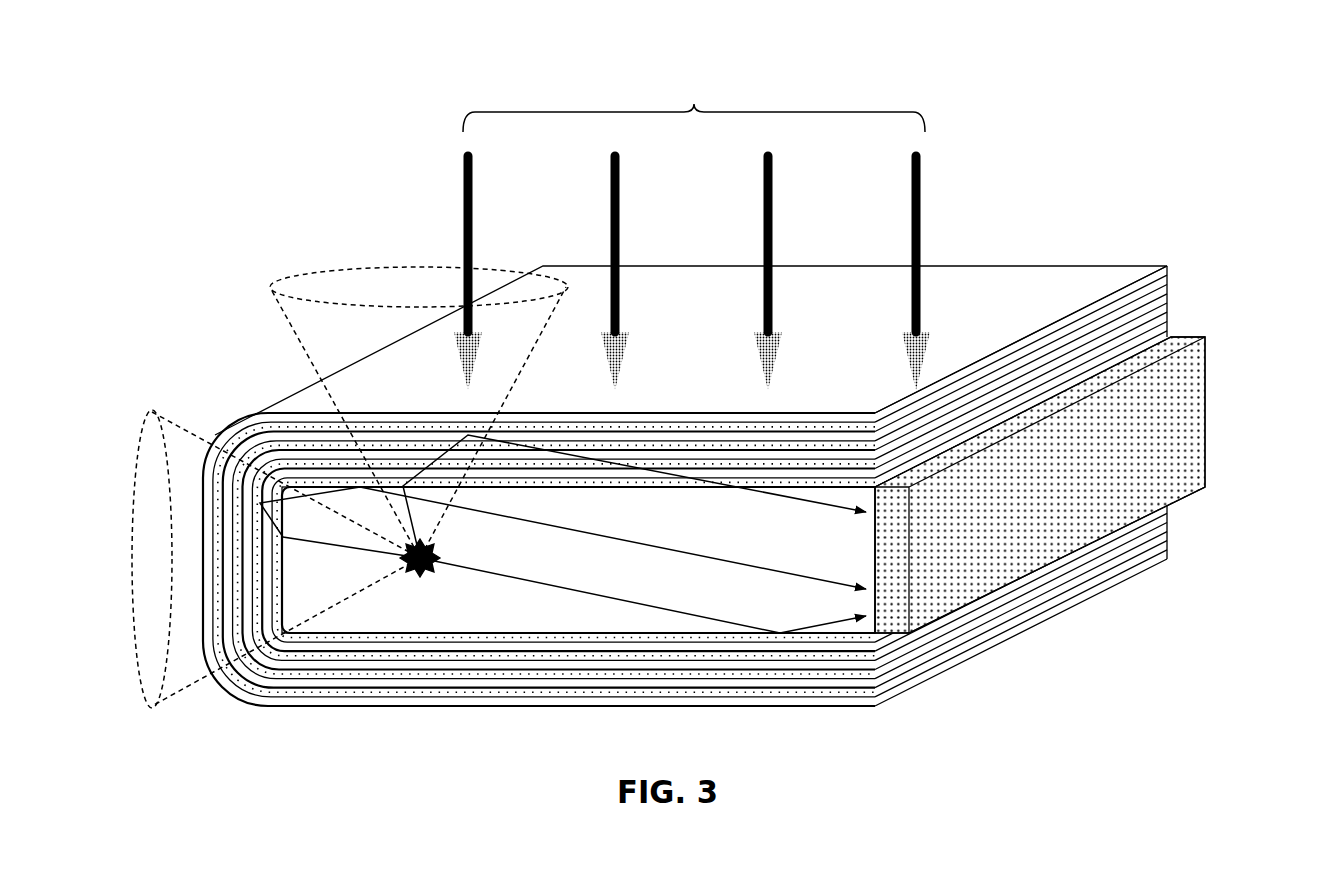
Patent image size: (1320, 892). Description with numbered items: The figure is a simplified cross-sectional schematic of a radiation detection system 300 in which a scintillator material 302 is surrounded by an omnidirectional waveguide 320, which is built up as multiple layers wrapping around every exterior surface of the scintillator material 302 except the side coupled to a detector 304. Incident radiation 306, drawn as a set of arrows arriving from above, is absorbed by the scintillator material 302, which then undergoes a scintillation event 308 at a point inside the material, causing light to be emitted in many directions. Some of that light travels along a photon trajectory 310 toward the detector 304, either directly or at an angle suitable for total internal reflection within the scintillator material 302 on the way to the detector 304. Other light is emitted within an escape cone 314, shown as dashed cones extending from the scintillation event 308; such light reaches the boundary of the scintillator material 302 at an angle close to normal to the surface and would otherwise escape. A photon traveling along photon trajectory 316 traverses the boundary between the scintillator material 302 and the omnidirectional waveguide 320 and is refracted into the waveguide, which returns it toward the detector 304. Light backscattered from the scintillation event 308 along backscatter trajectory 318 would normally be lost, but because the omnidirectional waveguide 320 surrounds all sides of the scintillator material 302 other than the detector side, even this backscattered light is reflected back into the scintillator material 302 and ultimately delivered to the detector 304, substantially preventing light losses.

The radiation detection system 300 is at (300, 168).
The scintillator material 302 is at (598, 572).
The detector 304 is at (1080, 498).
The incident radiation 306 is at (692, 226).
The scintillation event 308 is at (437, 592).
The photon trajectory 310 is at (473, 578).
The escape cone 314 is at (260, 313).
The photon trajectory 316 is at (767, 495).
The backscatter trajectory 318 is at (312, 548).
The omnidirectional waveguide 320 is at (1205, 300).